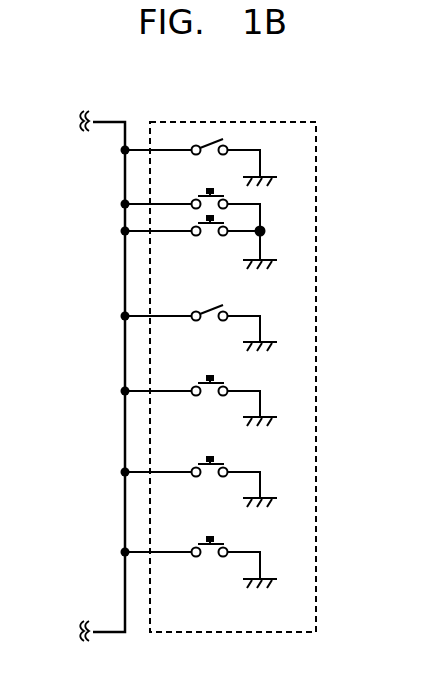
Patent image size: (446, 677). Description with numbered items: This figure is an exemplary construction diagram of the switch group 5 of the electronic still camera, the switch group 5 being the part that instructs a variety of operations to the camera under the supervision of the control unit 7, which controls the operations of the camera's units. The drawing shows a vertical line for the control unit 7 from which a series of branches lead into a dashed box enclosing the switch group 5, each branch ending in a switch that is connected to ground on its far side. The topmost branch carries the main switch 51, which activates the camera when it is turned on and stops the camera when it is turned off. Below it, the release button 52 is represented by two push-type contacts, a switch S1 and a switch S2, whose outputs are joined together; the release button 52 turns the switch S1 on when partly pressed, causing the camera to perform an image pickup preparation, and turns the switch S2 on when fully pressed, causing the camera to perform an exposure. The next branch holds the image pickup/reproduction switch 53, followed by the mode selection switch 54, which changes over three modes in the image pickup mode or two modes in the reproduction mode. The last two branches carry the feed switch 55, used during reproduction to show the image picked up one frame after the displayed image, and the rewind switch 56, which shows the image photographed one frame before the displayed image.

The control unit 7 is at (110, 122).
The switch group 5 is at (216, 122).
The main switch 51 is at (214, 143).
The switch S1 is at (198, 195).
The switch S2 is at (198, 227).
The release button 52 is at (261, 216).
The image pickup/reproduction switch 53 is at (207, 307).
The mode selection switch 54 is at (198, 382).
The feed switch 55 is at (198, 463).
The rewind switch 56 is at (198, 543).